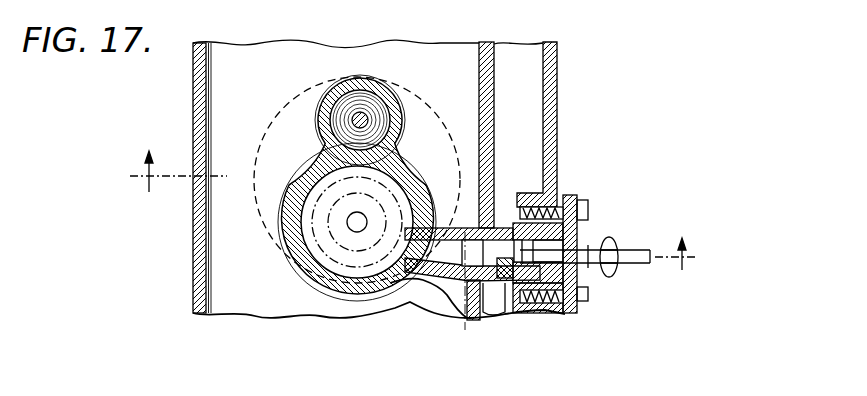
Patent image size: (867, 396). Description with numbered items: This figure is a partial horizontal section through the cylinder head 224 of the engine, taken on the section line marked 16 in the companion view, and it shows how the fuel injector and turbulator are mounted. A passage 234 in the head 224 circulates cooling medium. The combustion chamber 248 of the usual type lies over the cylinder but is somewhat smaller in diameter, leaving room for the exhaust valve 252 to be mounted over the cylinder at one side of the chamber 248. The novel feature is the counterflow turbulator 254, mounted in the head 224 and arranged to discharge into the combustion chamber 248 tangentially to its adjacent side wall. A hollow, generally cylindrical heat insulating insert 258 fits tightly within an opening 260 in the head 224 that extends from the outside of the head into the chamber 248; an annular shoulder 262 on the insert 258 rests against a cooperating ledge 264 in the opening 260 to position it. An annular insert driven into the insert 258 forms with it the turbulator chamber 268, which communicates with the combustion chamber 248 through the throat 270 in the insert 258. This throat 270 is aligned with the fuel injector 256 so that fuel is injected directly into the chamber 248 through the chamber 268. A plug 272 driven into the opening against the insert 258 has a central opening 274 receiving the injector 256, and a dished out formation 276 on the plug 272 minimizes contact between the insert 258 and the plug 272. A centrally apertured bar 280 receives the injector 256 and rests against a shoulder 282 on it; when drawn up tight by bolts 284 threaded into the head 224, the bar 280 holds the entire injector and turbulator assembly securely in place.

The section line 16 is at (428, 210).
The cylinder head 224 is at (549, 130).
The passage 234 is at (228, 109).
The combustion chamber 248 is at (313, 243).
The exhaust valve 252 is at (355, 77).
The counterflow turbulator 254 is at (478, 281).
The fuel injector 256 is at (618, 245).
The heat insulating insert 258 is at (457, 258).
The opening 260 is at (472, 300).
The annular shoulder 262 is at (505, 305).
The ledge 264 is at (488, 302).
The turbulator chamber 268 is at (442, 270).
The throat 270 is at (413, 256).
The plug 272 is at (563, 245).
The central opening 274 is at (558, 312).
The dished out formation 276 is at (500, 242).
The bar 280 is at (575, 274).
The shoulder 282 is at (612, 238).
The bolts 284 is at (583, 206).